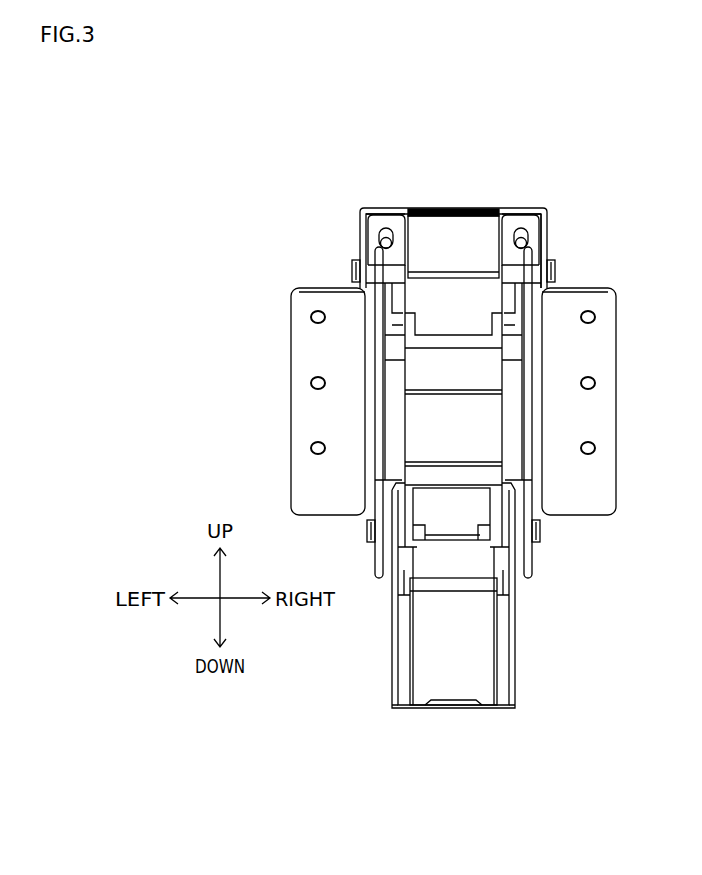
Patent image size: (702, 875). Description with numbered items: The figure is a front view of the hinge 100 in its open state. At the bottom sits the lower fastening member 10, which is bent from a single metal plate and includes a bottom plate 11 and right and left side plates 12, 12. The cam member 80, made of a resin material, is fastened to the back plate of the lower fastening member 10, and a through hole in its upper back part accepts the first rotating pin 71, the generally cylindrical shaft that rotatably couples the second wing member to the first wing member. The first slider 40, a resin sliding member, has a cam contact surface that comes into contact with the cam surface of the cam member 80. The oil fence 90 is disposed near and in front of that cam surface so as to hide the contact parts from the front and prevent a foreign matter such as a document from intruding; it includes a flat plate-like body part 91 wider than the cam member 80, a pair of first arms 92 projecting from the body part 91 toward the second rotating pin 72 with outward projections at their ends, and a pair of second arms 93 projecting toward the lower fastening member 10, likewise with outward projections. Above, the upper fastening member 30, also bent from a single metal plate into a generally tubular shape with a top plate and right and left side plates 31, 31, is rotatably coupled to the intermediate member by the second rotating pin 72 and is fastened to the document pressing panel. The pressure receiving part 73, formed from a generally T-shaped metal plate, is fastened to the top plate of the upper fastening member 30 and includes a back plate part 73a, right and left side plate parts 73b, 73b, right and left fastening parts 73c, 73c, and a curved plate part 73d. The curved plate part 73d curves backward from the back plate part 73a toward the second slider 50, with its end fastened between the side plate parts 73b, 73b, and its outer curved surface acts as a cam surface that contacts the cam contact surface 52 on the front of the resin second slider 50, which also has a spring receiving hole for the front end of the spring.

The hinge 100 is at (220, 217).
The lower fastening member 10 is at (377, 672).
The bottom plate 11 is at (455, 711).
The side plate 12 is at (397, 711).
The upper fastening member 30 is at (635, 401).
The side plate 31 is at (548, 246).
The first slider 40 is at (395, 452).
The second slider 50 is at (370, 350).
The cam contact surface 52 is at (403, 325).
The first rotating pin 71 is at (541, 530).
The second rotating pin 72 is at (556, 271).
The pressure receiving part 73 is at (538, 213).
The back plate part 73a is at (446, 272).
The side plate part 73b is at (407, 232).
The fastening part 73c is at (390, 212).
The curved plate part 73d is at (412, 298).
The cam member 80 is at (504, 660).
The oil fence 90 is at (512, 587).
The body part 91 is at (407, 566).
The first arm 92 is at (422, 531).
The second arm 93 is at (405, 592).